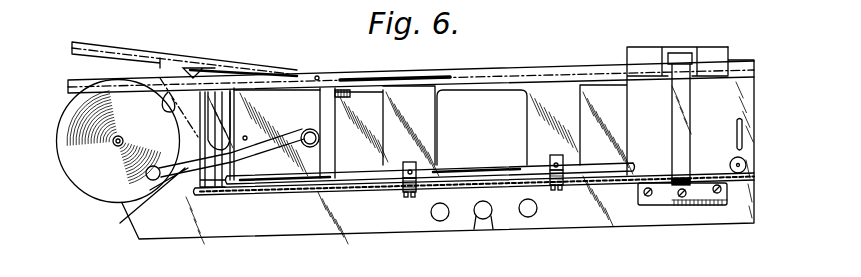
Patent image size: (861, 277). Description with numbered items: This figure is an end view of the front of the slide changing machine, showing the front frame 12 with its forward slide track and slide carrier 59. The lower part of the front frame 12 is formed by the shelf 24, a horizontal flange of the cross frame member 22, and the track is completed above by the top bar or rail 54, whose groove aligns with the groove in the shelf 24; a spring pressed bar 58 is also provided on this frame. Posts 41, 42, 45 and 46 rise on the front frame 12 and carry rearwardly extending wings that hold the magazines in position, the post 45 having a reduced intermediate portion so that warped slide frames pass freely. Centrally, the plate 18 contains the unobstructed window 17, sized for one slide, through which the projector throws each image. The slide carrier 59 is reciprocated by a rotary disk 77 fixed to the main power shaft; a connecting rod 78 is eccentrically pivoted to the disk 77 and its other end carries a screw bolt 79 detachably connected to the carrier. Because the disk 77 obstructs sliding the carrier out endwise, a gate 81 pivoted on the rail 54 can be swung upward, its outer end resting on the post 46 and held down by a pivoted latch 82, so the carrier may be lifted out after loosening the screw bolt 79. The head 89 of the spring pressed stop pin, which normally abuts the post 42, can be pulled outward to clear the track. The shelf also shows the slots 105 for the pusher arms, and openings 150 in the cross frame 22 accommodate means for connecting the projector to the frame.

The front frame 12 is at (540, 65).
The window 17 is at (478, 100).
The plate 18 is at (427, 97).
The cross frame member 22 is at (752, 193).
The shelf 24 is at (618, 180).
The post 41 is at (605, 97).
The post 42 is at (737, 80).
The post 45 is at (337, 133).
The post 46 is at (205, 112).
The top bar or rail 54 is at (398, 73).
The spring pressed bar 58 is at (517, 172).
The slide carrier 59 is at (290, 100).
The rotary disk 77 is at (80, 162).
The connecting rod 78 is at (196, 182).
The screw bolt 79 is at (310, 143).
The gate 81 is at (167, 80).
The pivoted latch 82 is at (188, 100).
The head 89 is at (747, 165).
The slots 105 is at (702, 195).
The openings 150 is at (528, 217).